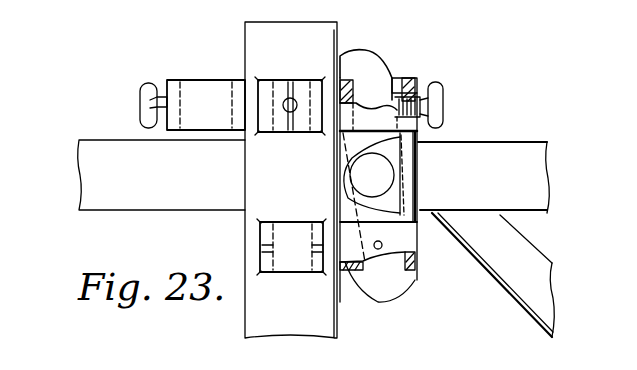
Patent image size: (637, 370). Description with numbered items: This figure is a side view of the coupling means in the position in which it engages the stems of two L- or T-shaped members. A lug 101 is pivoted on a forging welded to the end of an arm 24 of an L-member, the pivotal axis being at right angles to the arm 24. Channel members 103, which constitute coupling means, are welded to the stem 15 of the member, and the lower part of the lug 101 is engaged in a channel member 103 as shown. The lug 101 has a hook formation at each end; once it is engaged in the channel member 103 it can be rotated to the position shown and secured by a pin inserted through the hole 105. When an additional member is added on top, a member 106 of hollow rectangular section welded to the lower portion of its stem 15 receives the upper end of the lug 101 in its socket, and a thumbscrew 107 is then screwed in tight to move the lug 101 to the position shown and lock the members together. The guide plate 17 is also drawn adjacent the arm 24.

The stem 15 is at (245, 43).
The arm 24 is at (534, 205).
The guide plate 17 is at (516, 291).
The lug 101 is at (372, 49).
The channel member 103 is at (260, 258).
The hole 105 is at (379, 249).
The member of hollow rectangular section 106 is at (404, 78).
The thumbscrew 107 is at (445, 104).